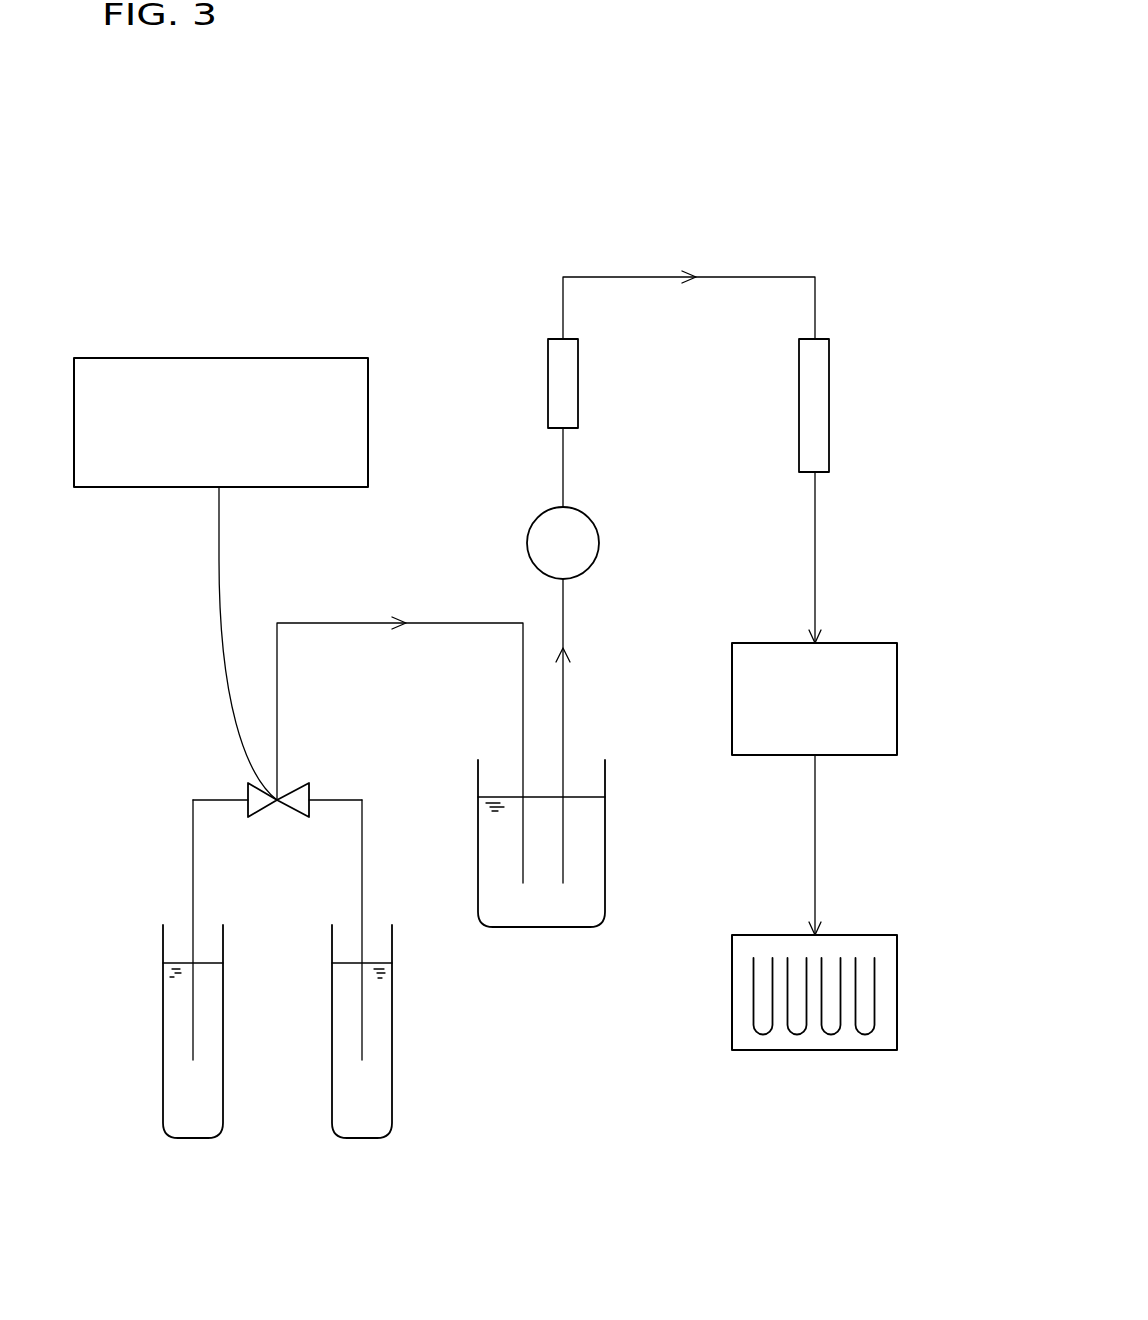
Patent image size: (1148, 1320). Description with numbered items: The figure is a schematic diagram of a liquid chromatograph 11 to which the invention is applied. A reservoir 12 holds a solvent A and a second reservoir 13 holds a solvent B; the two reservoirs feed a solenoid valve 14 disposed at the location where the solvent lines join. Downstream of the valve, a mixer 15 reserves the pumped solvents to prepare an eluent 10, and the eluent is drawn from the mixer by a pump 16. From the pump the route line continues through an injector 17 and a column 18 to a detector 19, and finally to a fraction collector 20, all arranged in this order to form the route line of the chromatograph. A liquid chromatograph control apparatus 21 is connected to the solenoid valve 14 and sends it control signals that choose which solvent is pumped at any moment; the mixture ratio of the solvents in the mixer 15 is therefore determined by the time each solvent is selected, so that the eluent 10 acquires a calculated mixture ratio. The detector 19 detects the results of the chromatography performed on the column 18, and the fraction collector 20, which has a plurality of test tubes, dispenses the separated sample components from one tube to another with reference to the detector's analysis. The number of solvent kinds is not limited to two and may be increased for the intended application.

The eluent 10 is at (595, 865).
The liquid chromatograph 11 is at (683, 227).
The reservoir 12 is at (200, 1138).
The reservoir 13 is at (370, 1138).
The solenoid valve 14 is at (309, 790).
The mixer 15 is at (543, 927).
The pump 16 is at (602, 538).
The injector 17 is at (550, 383).
The column 18 is at (830, 405).
The detector 19 is at (865, 755).
The fraction collector 20 is at (828, 1050).
The liquid chromatograph control apparatus 21 is at (182, 358).